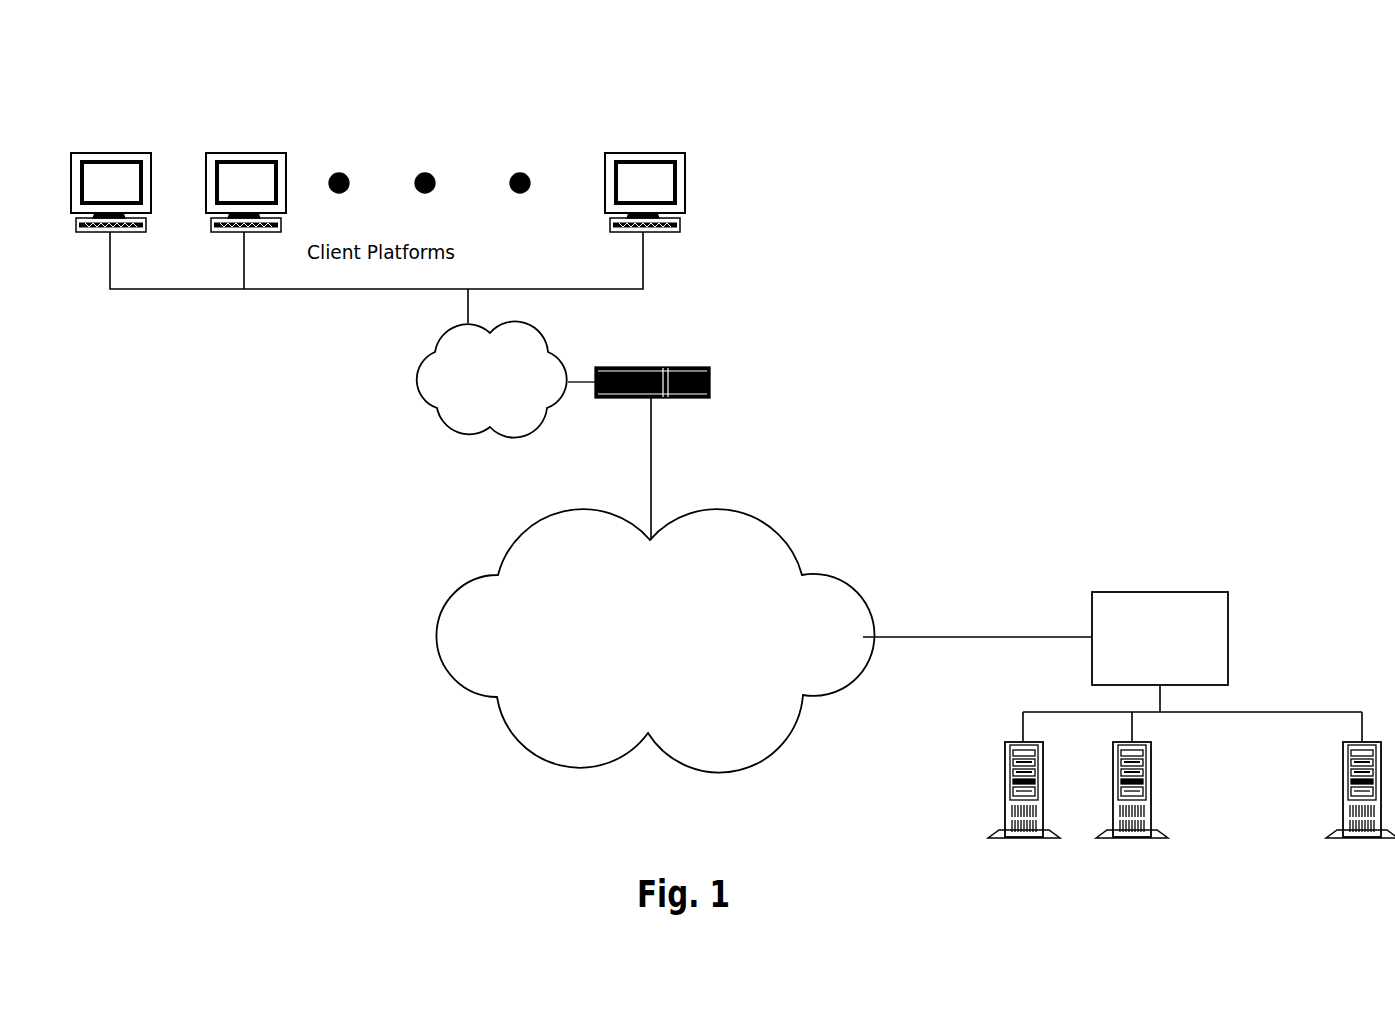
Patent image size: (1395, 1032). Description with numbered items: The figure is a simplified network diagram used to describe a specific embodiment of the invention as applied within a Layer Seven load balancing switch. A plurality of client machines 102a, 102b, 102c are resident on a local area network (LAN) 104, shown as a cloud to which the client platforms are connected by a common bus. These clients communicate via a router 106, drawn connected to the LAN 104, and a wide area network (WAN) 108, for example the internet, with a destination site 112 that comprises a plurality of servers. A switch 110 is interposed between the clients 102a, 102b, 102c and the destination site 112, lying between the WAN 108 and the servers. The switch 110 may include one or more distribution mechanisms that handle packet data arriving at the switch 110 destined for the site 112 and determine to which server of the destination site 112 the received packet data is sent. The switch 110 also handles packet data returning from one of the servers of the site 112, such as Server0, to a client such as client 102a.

The client machine 102a is at (125, 153).
The client machine 102b is at (259, 153).
The client machine 102c is at (657, 153).
The local area network (LAN) 104 is at (512, 324).
The router 106 is at (653, 367).
The wide area network (WAN) 108 is at (433, 636).
The switch 110 is at (1162, 592).
The destination site 112 is at (956, 830).